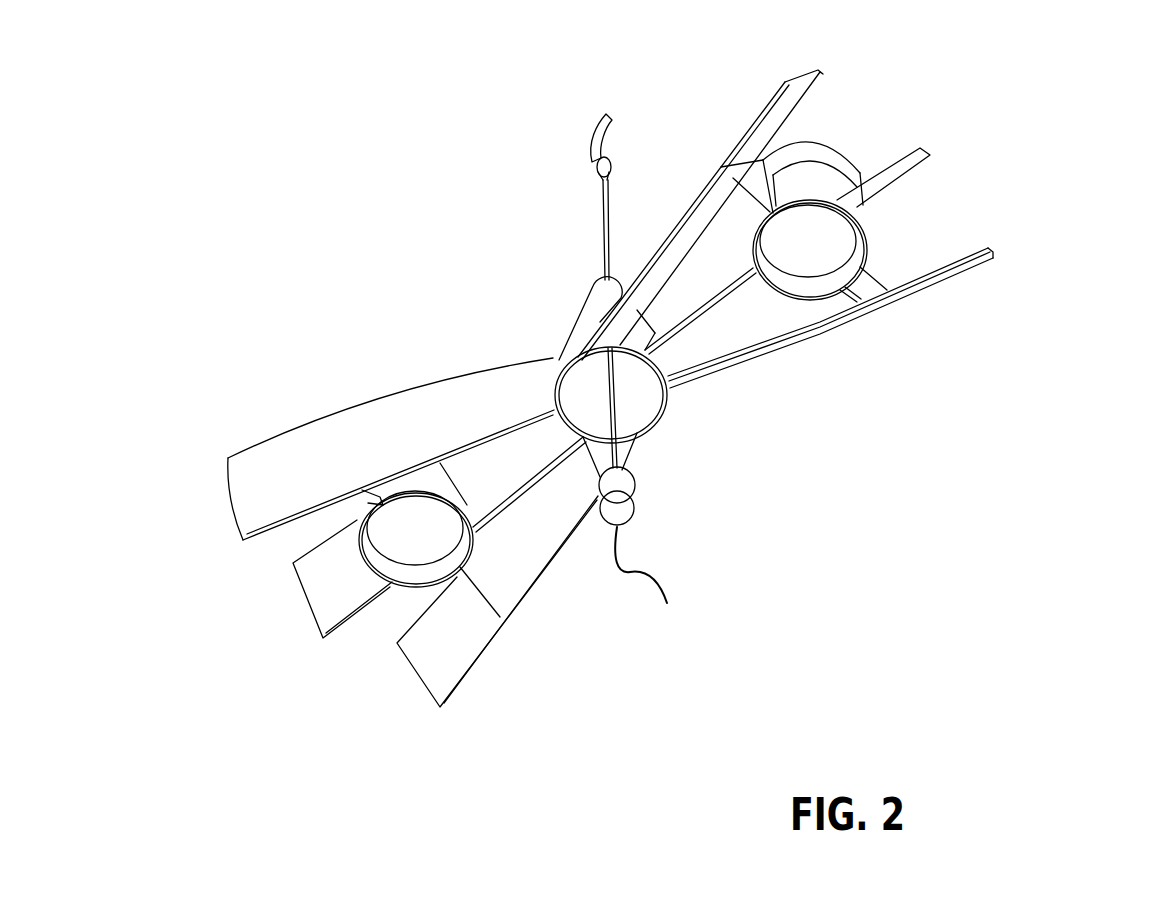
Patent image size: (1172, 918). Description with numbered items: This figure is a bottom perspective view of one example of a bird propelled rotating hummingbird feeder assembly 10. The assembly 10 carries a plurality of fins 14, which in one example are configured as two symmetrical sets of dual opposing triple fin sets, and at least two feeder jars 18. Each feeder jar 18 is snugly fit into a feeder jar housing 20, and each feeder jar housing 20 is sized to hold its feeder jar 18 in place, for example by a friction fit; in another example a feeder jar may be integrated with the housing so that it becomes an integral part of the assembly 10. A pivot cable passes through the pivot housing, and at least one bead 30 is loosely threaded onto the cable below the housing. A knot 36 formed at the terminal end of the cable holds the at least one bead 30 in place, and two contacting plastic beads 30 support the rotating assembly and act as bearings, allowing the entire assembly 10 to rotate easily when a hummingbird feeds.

The bird propelled rotating hummingbird feeder assembly 10 is at (1146, 424).
The fin 14 is at (387, 456).
The feeder jar 18 is at (431, 544).
The feeder jar housing 20 is at (443, 483).
The bead 30 is at (633, 480).
The knot 36 is at (654, 586).